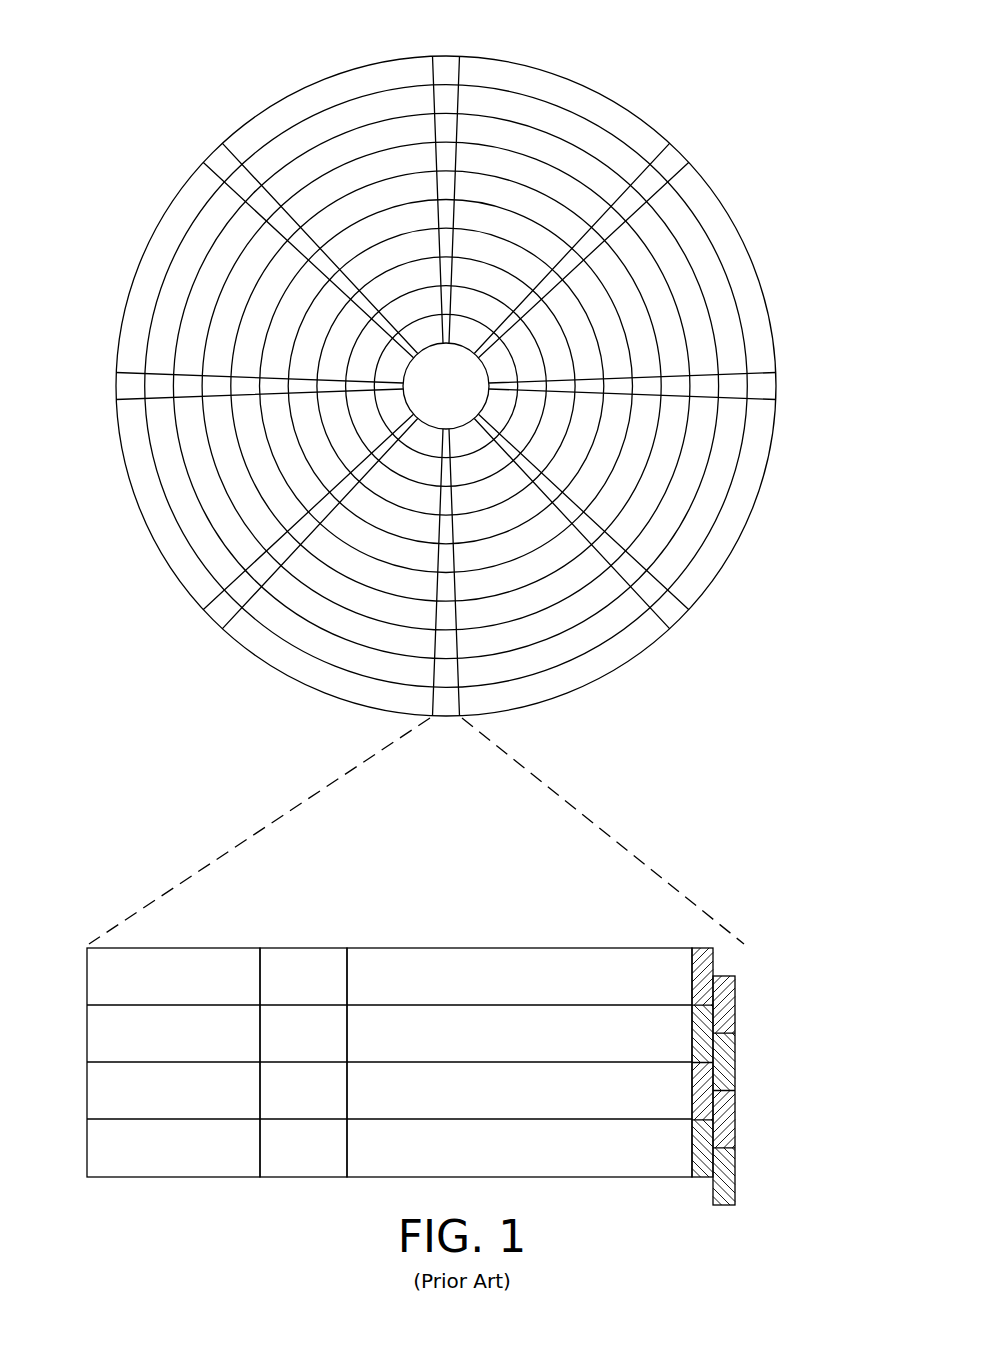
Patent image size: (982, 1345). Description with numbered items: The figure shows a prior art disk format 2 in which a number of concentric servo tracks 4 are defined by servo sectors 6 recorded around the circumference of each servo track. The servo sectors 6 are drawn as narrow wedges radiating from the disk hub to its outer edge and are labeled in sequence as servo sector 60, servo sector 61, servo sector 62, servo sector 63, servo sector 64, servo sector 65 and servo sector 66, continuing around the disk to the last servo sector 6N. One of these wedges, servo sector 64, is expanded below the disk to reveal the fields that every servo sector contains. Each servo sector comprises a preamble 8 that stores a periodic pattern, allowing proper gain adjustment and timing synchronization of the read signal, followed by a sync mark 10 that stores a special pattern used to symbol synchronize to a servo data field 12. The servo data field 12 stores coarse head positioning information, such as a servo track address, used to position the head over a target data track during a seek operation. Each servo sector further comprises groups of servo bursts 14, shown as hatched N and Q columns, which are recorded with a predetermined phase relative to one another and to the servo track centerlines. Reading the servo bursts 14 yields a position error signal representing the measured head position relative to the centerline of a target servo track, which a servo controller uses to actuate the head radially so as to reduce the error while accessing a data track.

The disk format 2 is at (203, 61).
The servo track 4 is at (558, 120).
The servo sector 6 is at (446, 399).
The servo sector 60 is at (447, 66).
The servo sector 61 is at (670, 162).
The servo sector 62 is at (768, 387).
The servo sector 63 is at (672, 613).
The servo sector 64 is at (298, 794).
The servo sector 65 is at (218, 615).
The servo sector 66 is at (122, 388).
The servo sector 6N is at (218, 158).
The preamble 8 is at (181, 946).
The sync mark 10 is at (305, 946).
The servo data field 12 is at (506, 946).
The servo bursts 14 is at (733, 946).